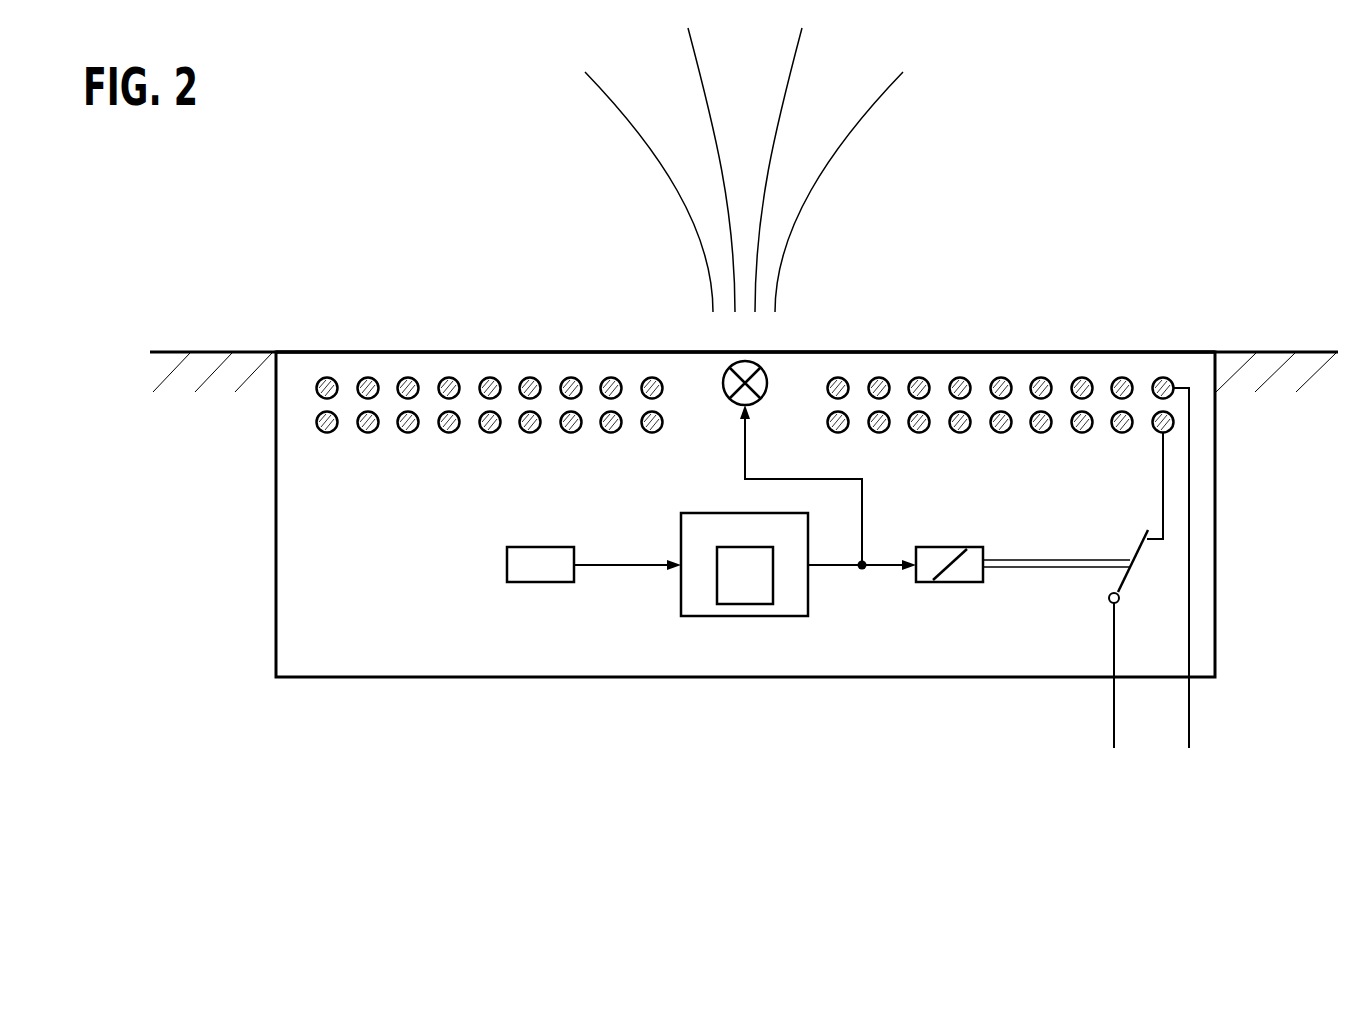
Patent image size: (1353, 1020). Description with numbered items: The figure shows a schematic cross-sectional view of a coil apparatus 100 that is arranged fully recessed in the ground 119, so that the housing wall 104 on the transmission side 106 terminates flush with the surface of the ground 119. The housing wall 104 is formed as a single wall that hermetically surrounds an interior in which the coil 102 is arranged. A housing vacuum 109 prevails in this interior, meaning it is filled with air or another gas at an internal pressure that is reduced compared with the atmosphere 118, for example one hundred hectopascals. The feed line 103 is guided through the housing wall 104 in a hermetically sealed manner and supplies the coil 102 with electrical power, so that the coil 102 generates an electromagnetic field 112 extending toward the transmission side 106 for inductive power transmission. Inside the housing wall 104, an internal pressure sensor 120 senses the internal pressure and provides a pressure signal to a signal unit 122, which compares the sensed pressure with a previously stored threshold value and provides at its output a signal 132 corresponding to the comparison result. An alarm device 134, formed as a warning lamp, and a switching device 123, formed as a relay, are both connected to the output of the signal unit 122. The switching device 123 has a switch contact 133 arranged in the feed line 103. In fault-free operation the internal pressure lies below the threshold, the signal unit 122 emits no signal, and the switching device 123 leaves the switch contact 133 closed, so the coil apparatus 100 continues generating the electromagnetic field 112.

The coil apparatus 100 is at (368, 288).
The coil 102 is at (652, 377).
The feed line 103 is at (1189, 716).
The housing wall 104 is at (1215, 500).
The transmission side 106 is at (502, 343).
The housing vacuum 109 is at (408, 570).
The electromagnetic field 112 is at (817, 173).
The atmosphere 118 is at (1128, 191).
The ground 119 is at (1287, 352).
The internal pressure sensor 120 is at (522, 583).
The signal unit 122 is at (733, 617).
The switching device 123 is at (946, 583).
The signal 132 is at (867, 569).
The switch contact 133 is at (1130, 548).
The alarm device 134 is at (768, 383).